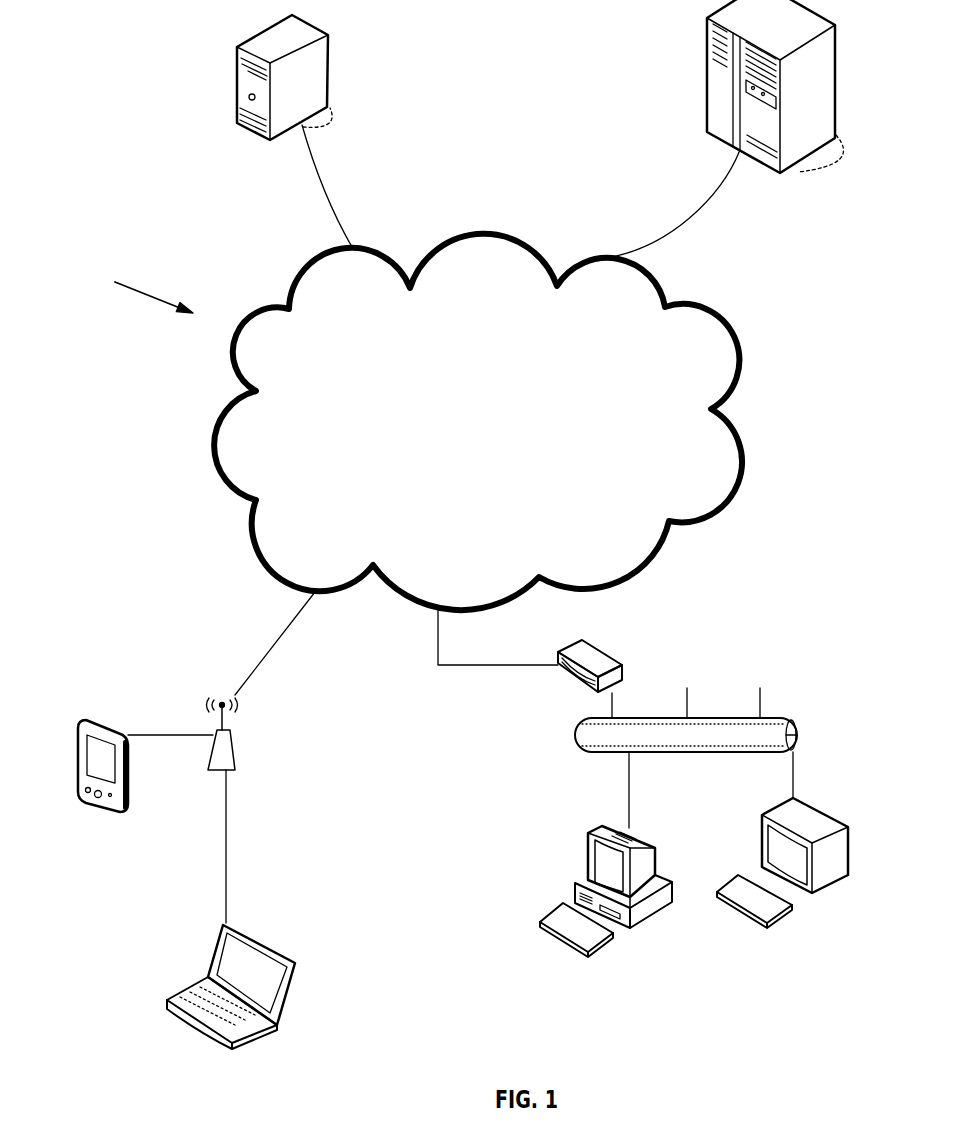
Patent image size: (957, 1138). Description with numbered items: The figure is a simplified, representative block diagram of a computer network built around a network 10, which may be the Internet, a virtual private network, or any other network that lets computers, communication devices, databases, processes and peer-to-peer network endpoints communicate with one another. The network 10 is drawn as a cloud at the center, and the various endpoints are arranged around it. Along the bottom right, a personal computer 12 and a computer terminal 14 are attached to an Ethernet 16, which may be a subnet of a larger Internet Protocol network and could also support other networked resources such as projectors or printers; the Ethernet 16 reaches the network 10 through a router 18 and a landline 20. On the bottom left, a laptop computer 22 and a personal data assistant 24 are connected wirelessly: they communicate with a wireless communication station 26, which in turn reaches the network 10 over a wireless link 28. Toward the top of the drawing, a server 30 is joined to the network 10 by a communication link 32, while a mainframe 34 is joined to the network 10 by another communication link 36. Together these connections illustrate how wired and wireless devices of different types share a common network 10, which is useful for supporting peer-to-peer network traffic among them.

The network 10 is at (135, 272).
The personal computer 12 is at (582, 875).
The computer terminal 14 is at (828, 815).
The Ethernet 16 is at (790, 717).
The router 18 is at (622, 665).
The landline 20 is at (480, 667).
The laptop computer 22 is at (250, 1040).
The personal data assistant 24 is at (107, 720).
The wireless communication station 26 is at (237, 767).
The wireless link 28 is at (268, 653).
The server 30 is at (330, 78).
The communication link 32 is at (337, 223).
The mainframe 34 is at (790, 177).
The communication link 36 is at (690, 219).